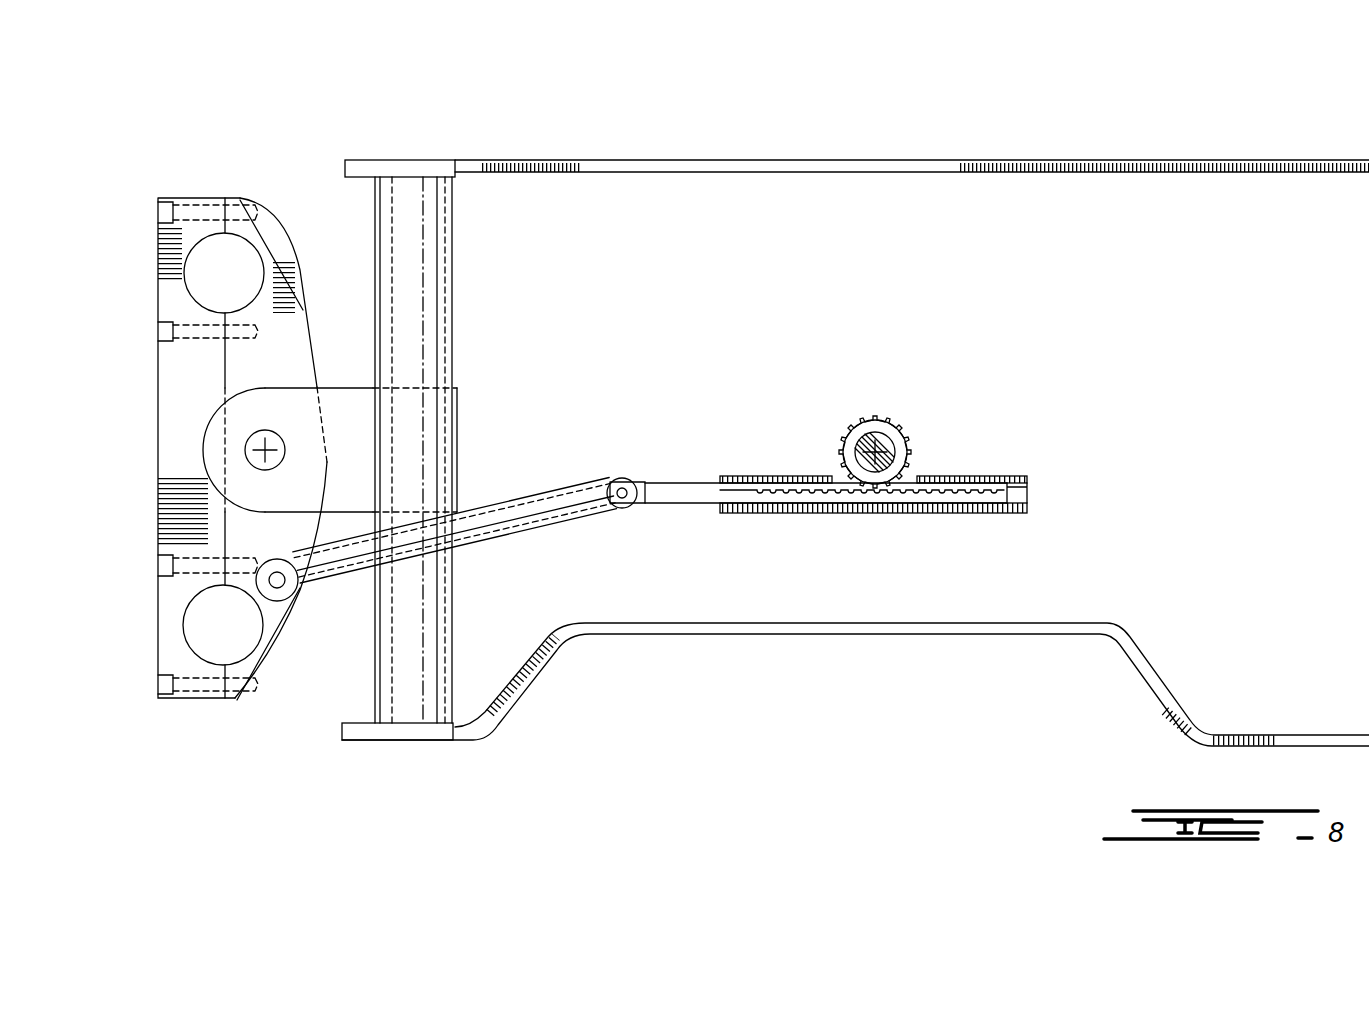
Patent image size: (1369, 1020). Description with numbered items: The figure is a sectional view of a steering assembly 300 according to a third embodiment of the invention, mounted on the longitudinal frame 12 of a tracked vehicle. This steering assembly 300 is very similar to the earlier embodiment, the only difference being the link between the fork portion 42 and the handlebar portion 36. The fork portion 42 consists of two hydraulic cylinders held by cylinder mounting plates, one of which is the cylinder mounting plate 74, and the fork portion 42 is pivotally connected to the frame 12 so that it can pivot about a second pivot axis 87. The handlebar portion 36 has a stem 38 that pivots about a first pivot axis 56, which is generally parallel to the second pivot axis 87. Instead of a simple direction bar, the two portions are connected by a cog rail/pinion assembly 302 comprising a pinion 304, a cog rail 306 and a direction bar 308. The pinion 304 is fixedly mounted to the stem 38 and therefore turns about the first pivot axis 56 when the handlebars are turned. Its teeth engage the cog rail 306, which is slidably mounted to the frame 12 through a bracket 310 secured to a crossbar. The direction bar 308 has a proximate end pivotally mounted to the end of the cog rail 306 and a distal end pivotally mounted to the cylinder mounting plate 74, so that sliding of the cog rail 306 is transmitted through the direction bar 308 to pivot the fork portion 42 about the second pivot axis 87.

The longitudinal frame 12 is at (1068, 634).
The handlebar portion 36 is at (896, 438).
The stem 38 is at (893, 432).
The fork portion 42 is at (204, 170).
The first pivot axis 56 is at (876, 455).
The cylinder mounting plate 74 is at (291, 222).
The second pivot axis 87 is at (252, 458).
The steering assembly 300 is at (285, 752).
The cog rail/pinion assembly 302 is at (579, 468).
The pinion 304 is at (848, 435).
The cog rail 306 is at (832, 507).
The direction bar 308 is at (550, 512).
The bracket 310 is at (1003, 483).